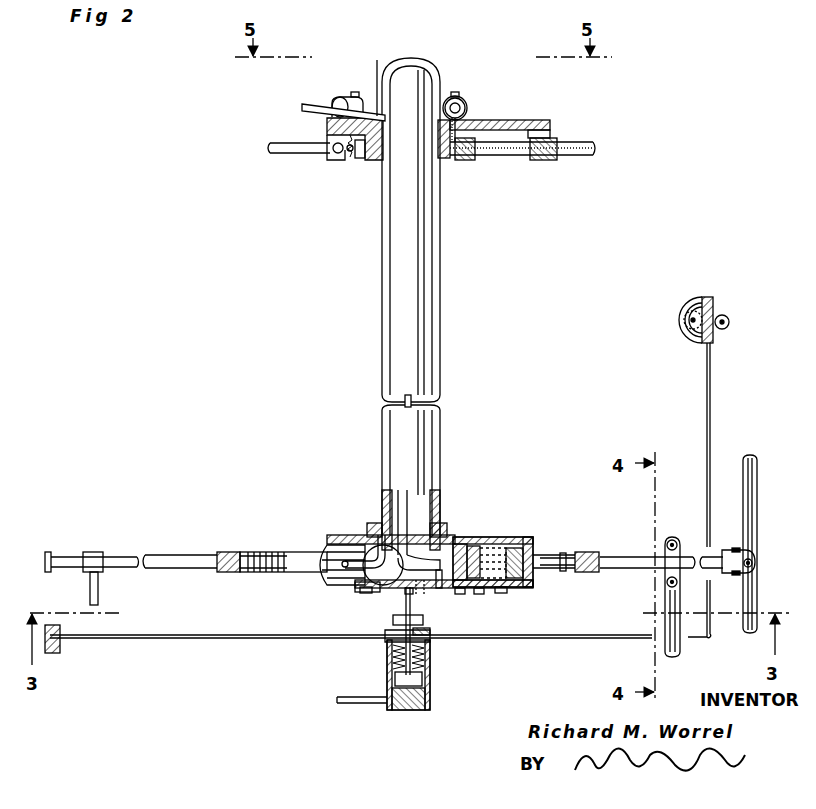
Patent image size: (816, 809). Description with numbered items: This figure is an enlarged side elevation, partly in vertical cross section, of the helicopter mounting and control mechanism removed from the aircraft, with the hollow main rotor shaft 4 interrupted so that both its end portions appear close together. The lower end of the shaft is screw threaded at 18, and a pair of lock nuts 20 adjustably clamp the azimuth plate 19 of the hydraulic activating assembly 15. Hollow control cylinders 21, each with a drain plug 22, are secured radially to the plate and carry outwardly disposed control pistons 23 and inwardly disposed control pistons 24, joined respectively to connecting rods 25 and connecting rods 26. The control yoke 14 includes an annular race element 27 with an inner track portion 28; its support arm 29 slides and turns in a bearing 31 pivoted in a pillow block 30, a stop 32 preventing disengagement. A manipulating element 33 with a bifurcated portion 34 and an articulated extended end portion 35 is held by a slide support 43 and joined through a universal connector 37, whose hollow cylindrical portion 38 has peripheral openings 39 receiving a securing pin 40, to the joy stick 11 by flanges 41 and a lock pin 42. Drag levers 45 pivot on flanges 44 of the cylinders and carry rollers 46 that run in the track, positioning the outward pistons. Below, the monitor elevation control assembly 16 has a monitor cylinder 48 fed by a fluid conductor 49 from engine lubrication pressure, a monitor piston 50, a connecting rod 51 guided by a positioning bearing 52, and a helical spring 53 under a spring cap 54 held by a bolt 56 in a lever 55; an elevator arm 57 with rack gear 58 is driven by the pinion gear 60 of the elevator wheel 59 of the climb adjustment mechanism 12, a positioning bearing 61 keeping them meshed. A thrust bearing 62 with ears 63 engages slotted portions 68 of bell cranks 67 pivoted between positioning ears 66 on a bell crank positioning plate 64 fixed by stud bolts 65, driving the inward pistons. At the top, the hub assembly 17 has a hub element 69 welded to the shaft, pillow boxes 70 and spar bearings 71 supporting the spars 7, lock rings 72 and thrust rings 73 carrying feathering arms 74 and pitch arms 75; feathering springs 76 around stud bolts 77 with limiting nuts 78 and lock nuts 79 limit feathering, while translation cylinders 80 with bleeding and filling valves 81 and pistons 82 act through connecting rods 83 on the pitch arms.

The main rotor shaft 4 is at (441, 298).
The spars 7 is at (280, 152).
The joy stick 11 is at (754, 458).
The climb adjustment mechanism 12 is at (706, 294).
The control yoke 14 is at (213, 546).
The hydraulic activating assembly 15 is at (472, 495).
The monitor elevation control assembly 16 is at (410, 714).
The pitch control and rotor mounting hub assembly 17 is at (472, 174).
The screw threads 18 is at (378, 530).
The azimuth plate 19 is at (498, 540).
The lock nuts 20 is at (368, 533).
The control cylinders 21 is at (345, 584).
The drain plug 22 is at (360, 589).
The outwardly disposed control pistons 23 is at (528, 543).
The inwardly disposed control pistons 24 is at (470, 540).
The connecting rods 25 is at (543, 560).
The connecting rods 26 is at (448, 530).
The annular race element 27 is at (222, 574).
The track portion 28 is at (278, 574).
The support arm 29 is at (162, 554).
The pillow block 30 is at (98, 595).
The bearing 31 is at (100, 551).
The stop 32 is at (48, 551).
The manipulating element 33 is at (695, 550).
The bifurcated portion 34 is at (652, 570).
The articulated extended end portion 35 is at (708, 570).
The universal connector 37 is at (760, 563).
The hollow cylindrical portion 38 is at (733, 549).
The peripheral openings 39 is at (738, 547).
The securing pin 40 is at (735, 575).
The flanges 41 is at (756, 556).
The lock pin 42 is at (751, 566).
The slide support 43 is at (672, 539).
The flanges 44 is at (330, 550).
The drag levers 45 is at (337, 575).
The rollers 46 is at (584, 551).
The monitor cylinder 48 is at (430, 707).
The fluid conductor 49 is at (356, 704).
The monitor piston 50 is at (394, 680).
The connecting rod 51 is at (430, 636).
The positioning bearing 52 is at (393, 620).
The helical spring 53 is at (392, 650).
The spring cap 54 is at (386, 635).
The lever 55 is at (575, 640).
The bolt 56 is at (428, 648).
The elevator arm 57 is at (711, 412).
The rack gear 58 is at (712, 306).
The elevator wheel 59 is at (678, 306).
The pinion gear 60 is at (683, 338).
The positioning bearing 61 is at (730, 325).
The thrust bearing 62 is at (393, 588).
The ears 63 is at (413, 590).
The bell crank positioning plate 64 is at (480, 592).
The stud bolts 65 is at (462, 594).
The positioning ears 66 is at (426, 592).
The bell cranks 67 is at (442, 588).
The slotted portions 68 is at (419, 569).
The hub element 69 is at (540, 120).
The pillow boxes 70 is at (552, 134).
The spar bearings 71 is at (468, 160).
The lock rings 72 is at (548, 160).
The thrust rings 73 is at (447, 155).
The feathering arms 74 is at (372, 160).
The pitch arms 75 is at (468, 112).
The feathering springs 76 is at (327, 130).
The stud bolts 77 is at (360, 162).
The limiting nuts 78 is at (343, 155).
The lock nuts 79 is at (351, 160).
The translation cylinders 80 is at (340, 99).
The bleeding and filling valves 81 is at (355, 91).
The pistons 82 is at (467, 103).
The connecting rods 83 is at (374, 75).